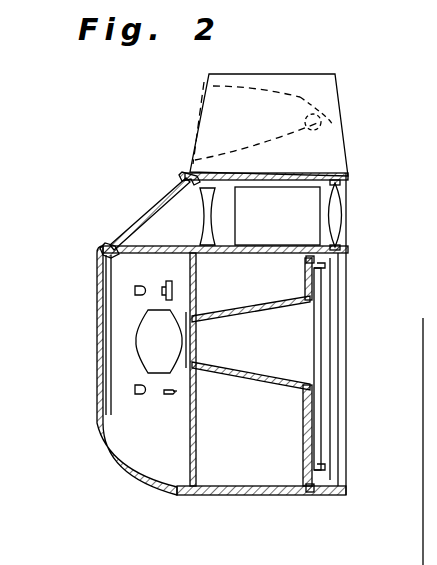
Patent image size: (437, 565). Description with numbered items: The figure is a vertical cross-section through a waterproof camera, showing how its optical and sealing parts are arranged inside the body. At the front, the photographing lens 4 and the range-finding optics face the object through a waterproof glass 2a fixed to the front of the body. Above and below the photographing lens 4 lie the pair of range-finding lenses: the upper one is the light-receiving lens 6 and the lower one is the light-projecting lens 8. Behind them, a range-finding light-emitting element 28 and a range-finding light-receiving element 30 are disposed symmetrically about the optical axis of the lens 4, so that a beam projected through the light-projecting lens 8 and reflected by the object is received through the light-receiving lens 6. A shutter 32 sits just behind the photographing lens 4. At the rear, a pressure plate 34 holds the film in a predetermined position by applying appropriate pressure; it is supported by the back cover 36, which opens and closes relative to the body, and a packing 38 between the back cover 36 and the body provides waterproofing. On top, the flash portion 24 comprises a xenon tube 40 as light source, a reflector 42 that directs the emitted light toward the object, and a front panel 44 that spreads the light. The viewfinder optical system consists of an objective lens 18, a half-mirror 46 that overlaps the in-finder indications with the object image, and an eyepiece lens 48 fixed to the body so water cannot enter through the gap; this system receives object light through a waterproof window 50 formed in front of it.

The waterproof glass 2a is at (100, 318).
The photographing lens 4 is at (140, 345).
The light-receiving lens 6 is at (134, 290).
The light-projecting lens 8 is at (134, 390).
The objective lens 18 is at (172, 195).
The flash portion 24 is at (230, 103).
The range-finding light-emitting element 28 is at (165, 398).
The range-finding light-receiving element 30 is at (164, 290).
The shutter 32 is at (188, 336).
The pressure plate 34 is at (318, 340).
The back cover 36 is at (345, 355).
The packing 38 is at (310, 260).
The xenon tube 40 is at (320, 122).
The reflector 42 is at (300, 97).
The front panel 44 is at (200, 131).
The half-mirror 46 is at (300, 190).
The eyepiece lens 48 is at (335, 215).
The waterproof window 50 is at (133, 238).